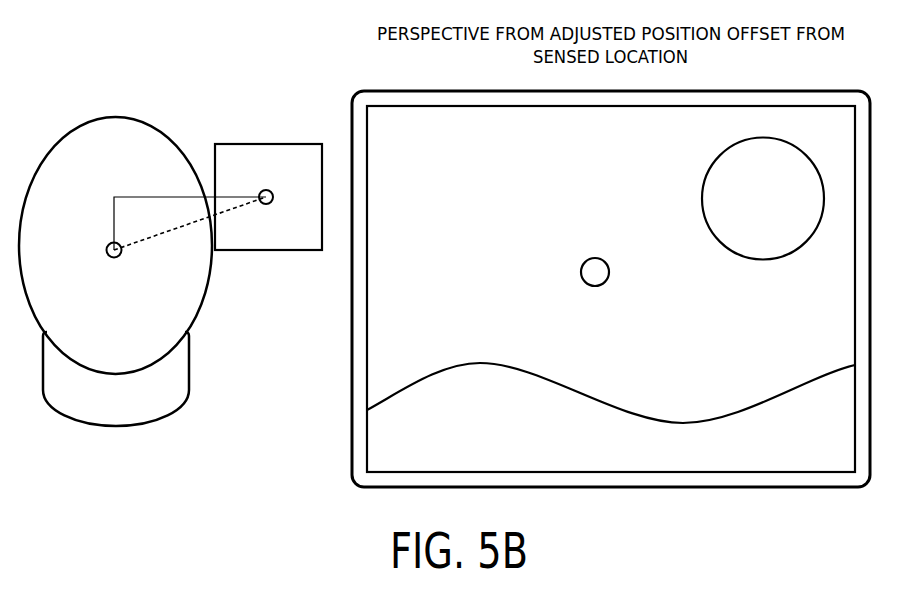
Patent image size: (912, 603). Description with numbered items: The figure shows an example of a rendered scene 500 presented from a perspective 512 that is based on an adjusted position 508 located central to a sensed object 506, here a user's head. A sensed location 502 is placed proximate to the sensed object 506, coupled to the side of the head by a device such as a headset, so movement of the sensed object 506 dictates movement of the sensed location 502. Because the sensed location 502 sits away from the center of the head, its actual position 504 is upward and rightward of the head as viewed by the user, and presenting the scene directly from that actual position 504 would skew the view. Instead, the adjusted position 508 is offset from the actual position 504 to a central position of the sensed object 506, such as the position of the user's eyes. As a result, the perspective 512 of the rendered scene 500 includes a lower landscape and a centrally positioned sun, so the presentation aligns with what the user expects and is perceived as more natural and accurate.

The rendered scene 500 is at (383, 90).
The sensed location 502 is at (259, 116).
The actual position 504 is at (266, 190).
The sensed object 506 is at (146, 98).
The adjusted position 508 is at (114, 243).
The perspective 512 is at (441, 150).